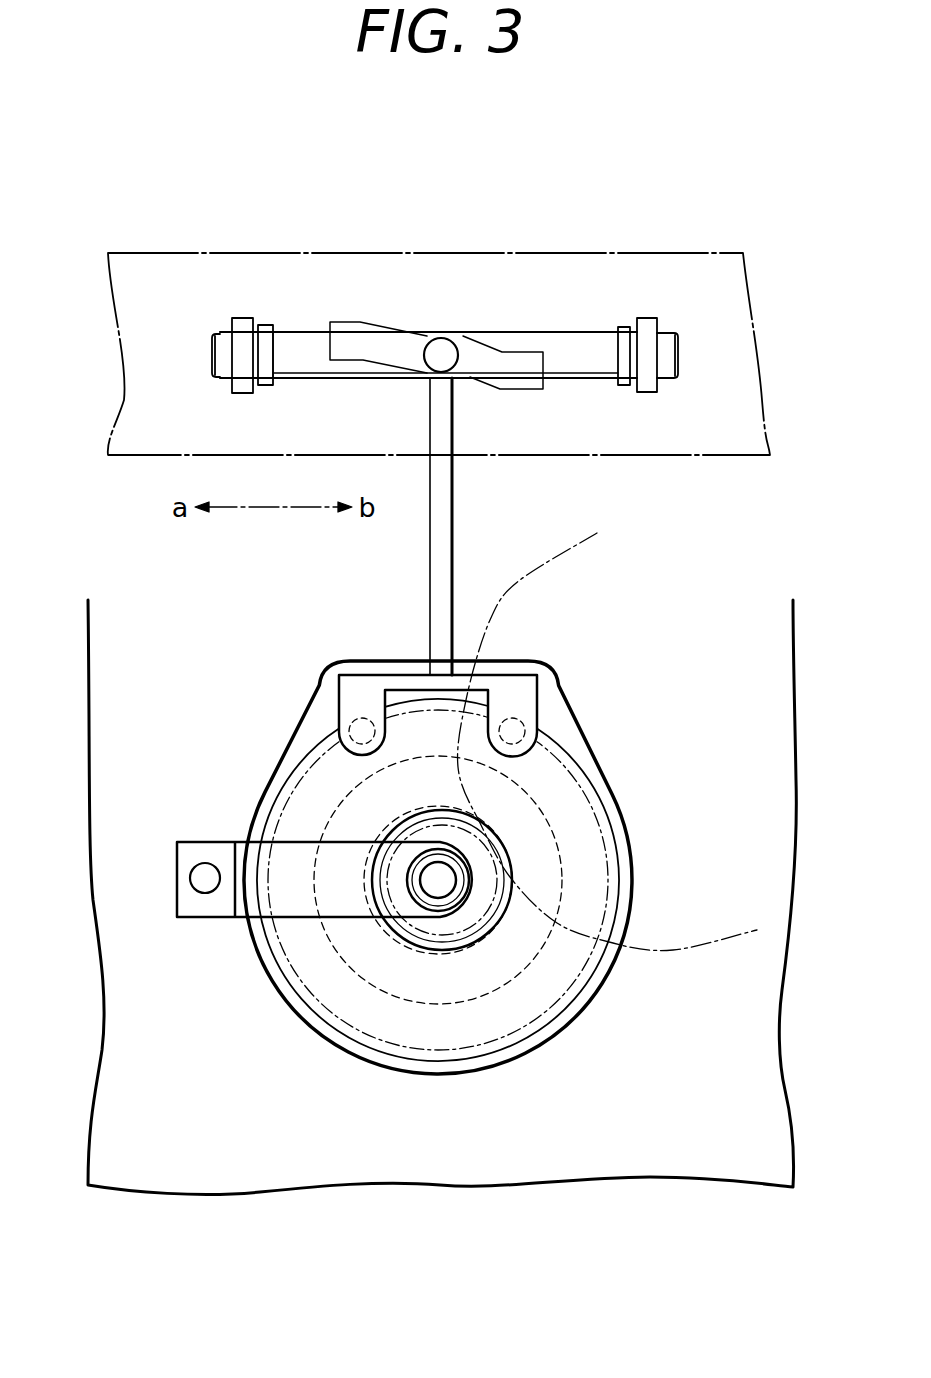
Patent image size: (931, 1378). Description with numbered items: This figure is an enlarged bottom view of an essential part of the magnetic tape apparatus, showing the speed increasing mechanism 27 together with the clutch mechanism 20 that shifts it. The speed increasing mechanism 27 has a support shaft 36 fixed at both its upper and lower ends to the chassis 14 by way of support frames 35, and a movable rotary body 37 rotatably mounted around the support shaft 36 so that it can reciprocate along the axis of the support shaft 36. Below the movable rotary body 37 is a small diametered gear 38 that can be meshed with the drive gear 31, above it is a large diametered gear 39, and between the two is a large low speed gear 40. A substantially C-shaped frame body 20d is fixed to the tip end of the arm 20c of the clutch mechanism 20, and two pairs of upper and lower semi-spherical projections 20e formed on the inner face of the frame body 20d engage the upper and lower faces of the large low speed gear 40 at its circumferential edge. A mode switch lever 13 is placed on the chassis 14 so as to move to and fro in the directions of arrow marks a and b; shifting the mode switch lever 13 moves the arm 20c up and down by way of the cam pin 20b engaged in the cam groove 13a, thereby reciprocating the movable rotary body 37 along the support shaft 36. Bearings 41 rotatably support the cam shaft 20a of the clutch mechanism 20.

The mode switch lever 13 is at (563, 260).
The cam groove 13a is at (357, 323).
The chassis 14 is at (408, 1172).
The clutch mechanism 20 is at (488, 312).
The cam shaft 20a is at (578, 340).
The cam pin 20b is at (440, 346).
The arm 20c is at (453, 513).
The frame body 20d is at (362, 683).
The semi-spherical projections 20e is at (337, 732).
The speed increasing mechanism 27 is at (293, 672).
The drive gear 31 is at (690, 952).
The support frames 35 is at (200, 918).
The support shaft 36 is at (430, 890).
The movable rotary body 37 is at (272, 810).
The small diametered gear 38 is at (489, 940).
The large diametered gear 39 is at (320, 960).
The large low speed gear 40 is at (577, 997).
The bearing 41 is at (243, 318).